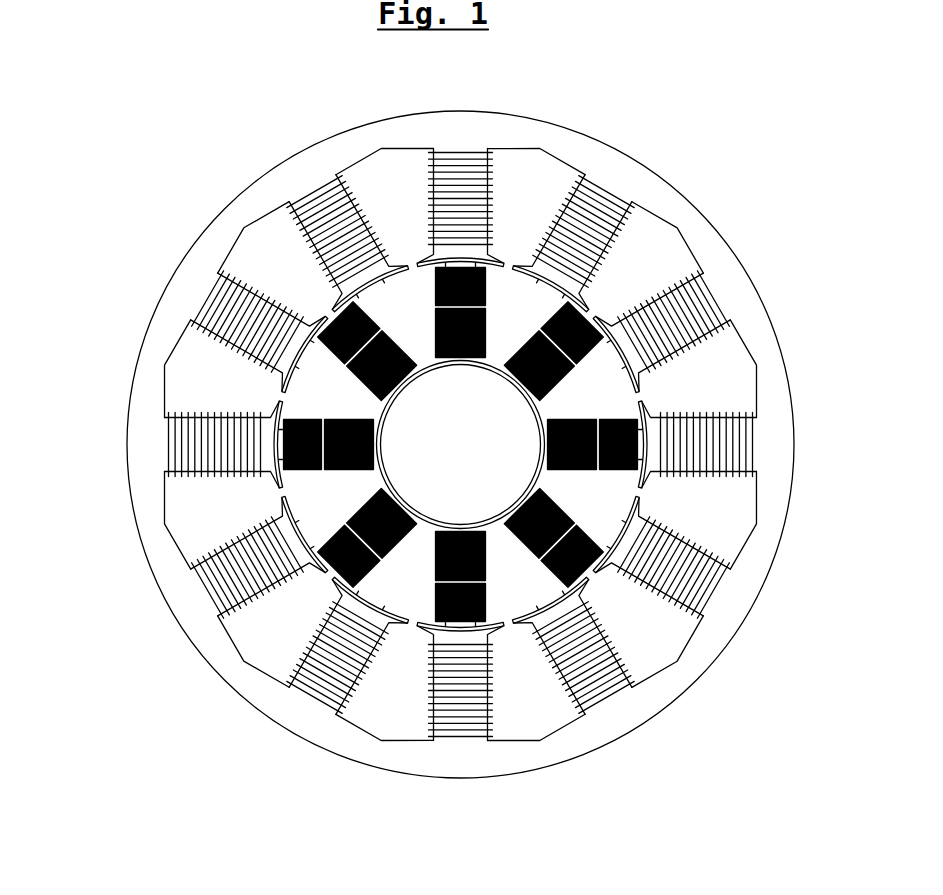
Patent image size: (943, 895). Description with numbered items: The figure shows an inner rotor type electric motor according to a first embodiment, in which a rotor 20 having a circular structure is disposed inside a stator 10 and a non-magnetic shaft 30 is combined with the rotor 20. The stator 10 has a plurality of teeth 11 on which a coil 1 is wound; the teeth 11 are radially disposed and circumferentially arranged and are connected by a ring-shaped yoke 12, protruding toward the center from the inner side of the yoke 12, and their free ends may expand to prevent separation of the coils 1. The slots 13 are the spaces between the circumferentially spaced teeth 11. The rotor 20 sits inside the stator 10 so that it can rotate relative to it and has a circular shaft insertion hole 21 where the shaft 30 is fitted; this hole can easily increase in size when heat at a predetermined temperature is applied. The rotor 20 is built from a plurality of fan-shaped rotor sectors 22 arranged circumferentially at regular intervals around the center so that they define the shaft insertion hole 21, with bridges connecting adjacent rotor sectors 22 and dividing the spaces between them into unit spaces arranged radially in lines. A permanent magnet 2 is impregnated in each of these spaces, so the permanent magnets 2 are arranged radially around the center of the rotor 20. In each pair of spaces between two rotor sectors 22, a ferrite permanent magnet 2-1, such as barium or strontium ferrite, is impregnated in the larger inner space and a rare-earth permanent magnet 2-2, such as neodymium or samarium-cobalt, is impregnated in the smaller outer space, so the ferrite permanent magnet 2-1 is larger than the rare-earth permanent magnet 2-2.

The coil 1 is at (632, 228).
The stator 10 is at (622, 128).
The teeth 11 is at (470, 150).
The yoke 12 is at (590, 143).
The slots 13 is at (537, 167).
The rotor 20 is at (630, 362).
The shaft insertion hole 21 is at (560, 400).
The rotor sectors 22 is at (400, 307).
The permanent magnet 2 is at (254, 575).
The ferrite permanent magnet 2-1 is at (345, 512).
The rare-earth permanent magnet 2-2 is at (340, 540).
The shaft 30 is at (505, 470).